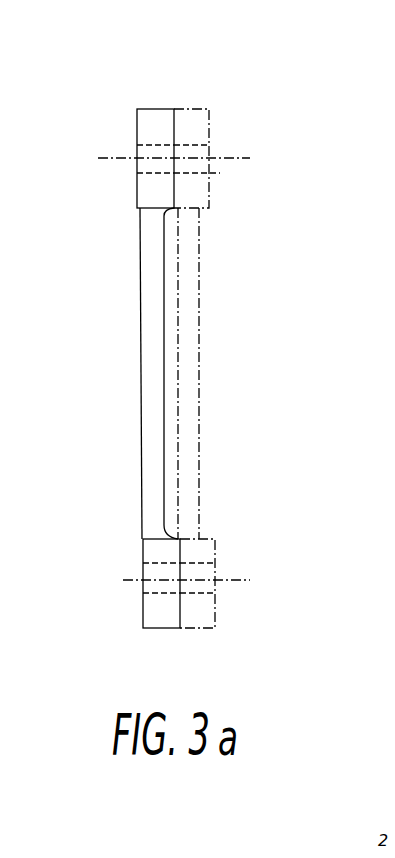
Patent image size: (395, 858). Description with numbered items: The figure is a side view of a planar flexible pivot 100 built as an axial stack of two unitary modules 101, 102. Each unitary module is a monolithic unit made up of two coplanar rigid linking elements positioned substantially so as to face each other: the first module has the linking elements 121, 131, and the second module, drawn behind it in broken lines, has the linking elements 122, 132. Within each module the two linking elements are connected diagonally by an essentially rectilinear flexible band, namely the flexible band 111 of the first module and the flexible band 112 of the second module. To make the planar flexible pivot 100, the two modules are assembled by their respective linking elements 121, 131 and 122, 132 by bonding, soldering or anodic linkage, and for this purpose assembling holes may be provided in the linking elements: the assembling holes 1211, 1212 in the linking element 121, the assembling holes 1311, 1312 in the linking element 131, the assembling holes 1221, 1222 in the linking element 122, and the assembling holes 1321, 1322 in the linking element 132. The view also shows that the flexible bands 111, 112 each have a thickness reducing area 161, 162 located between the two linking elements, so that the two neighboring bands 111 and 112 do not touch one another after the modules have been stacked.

The planar flexible pivot 100 is at (115, 393).
The unitary module 101 is at (130, 204).
The unitary module 102 is at (214, 133).
The flexible band 111 is at (145, 338).
The flexible band 112 is at (199, 373).
The rigid linking element 121 is at (155, 108).
The rigid linking element 122 is at (197, 108).
The assembling hole 1211 is at (137, 146).
The assembling hole 1212 is at (97, 128).
The assembling hole 1221 is at (222, 175).
The assembling hole 1222 is at (245, 209).
The rigid linking element 131 is at (145, 625).
The rigid linking element 132 is at (212, 630).
The assembling hole 1311 is at (150, 602).
The assembling hole 1312 is at (100, 597).
The assembling hole 1321 is at (215, 570).
The assembling hole 1322 is at (250, 579).
The thickness reducing area 161 is at (176, 440).
The thickness reducing area 162 is at (213, 527).